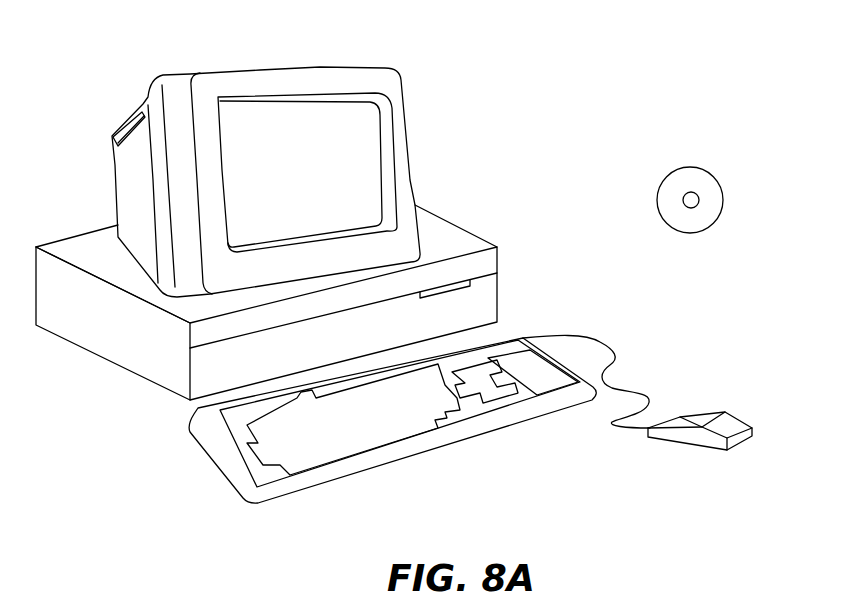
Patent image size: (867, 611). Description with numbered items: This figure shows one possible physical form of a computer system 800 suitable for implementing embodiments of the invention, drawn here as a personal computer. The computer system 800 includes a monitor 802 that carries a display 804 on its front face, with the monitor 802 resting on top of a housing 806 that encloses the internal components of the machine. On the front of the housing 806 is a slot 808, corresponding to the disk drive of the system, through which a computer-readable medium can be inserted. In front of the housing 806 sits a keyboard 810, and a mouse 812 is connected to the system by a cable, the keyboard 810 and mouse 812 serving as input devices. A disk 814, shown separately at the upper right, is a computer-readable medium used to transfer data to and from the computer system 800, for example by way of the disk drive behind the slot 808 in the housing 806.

The computer system 800 is at (610, 53).
The monitor 802 is at (415, 182).
The display 804 is at (372, 133).
The housing 806 is at (153, 383).
The disk drive slot 808 is at (472, 278).
The keyboard 810 is at (393, 462).
The mouse 812 is at (740, 417).
The disk 814 is at (708, 168).